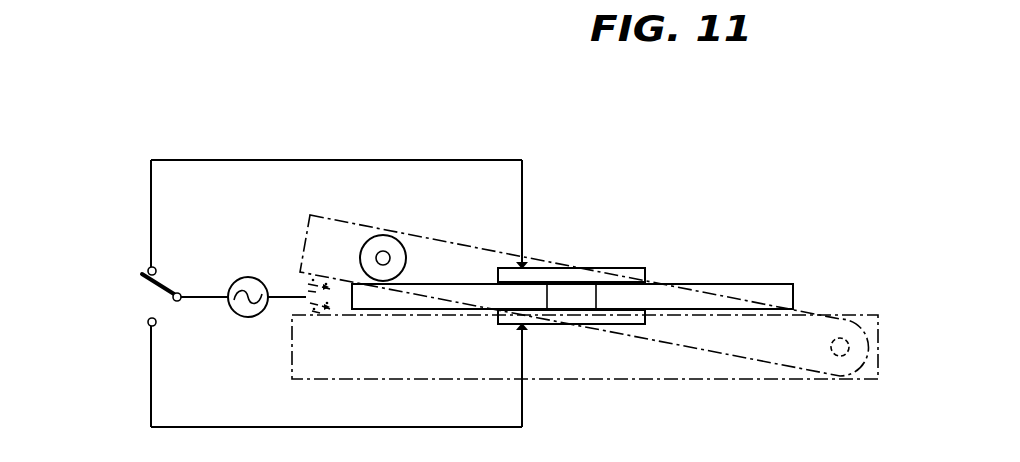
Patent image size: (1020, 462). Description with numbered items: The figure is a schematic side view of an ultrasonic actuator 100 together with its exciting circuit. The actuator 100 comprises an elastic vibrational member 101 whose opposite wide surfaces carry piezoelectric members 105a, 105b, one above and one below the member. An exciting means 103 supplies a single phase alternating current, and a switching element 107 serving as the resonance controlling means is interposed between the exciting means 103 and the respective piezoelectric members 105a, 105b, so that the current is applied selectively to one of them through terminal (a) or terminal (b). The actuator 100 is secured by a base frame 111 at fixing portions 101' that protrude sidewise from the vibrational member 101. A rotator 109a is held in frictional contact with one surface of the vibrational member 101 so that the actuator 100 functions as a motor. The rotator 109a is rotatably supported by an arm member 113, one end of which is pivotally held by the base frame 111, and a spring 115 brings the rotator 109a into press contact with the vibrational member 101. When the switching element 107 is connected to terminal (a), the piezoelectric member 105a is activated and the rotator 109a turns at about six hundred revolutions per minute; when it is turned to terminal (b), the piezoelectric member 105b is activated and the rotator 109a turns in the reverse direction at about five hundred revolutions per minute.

The ultrasonic actuator 100 is at (598, 228).
The elastic vibrational member 101 is at (737, 261).
The fixing portions 101' is at (572, 251).
The exciting means 103 is at (241, 318).
The piezoelectric member 105a is at (633, 277).
The piezoelectric member 105b is at (613, 318).
The switching element 107 is at (140, 291).
The rotator 109a is at (402, 255).
The base frame 111 is at (658, 377).
The arm member 113 is at (722, 350).
The spring 115 is at (312, 290).